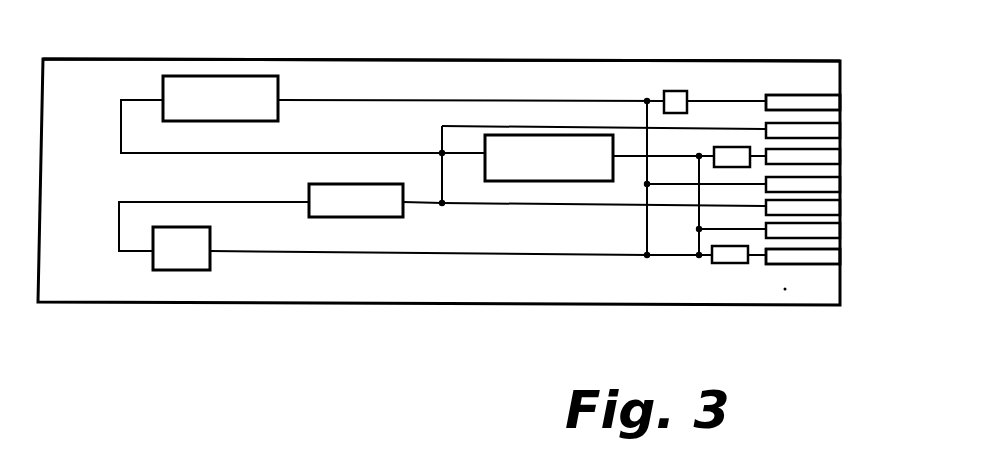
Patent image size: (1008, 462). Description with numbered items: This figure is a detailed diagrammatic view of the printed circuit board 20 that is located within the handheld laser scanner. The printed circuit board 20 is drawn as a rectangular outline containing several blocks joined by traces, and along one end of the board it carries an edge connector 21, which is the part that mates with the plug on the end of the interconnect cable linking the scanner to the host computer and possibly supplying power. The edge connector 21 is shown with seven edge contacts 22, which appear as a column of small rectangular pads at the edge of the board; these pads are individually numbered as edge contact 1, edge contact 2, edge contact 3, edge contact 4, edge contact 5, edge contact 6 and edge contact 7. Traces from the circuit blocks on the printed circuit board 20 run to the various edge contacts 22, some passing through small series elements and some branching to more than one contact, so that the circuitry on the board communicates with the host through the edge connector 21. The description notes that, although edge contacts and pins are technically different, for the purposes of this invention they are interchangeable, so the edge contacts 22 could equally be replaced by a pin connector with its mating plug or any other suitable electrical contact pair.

The edge contact 1 is at (812, 103).
The edge contact 2 is at (812, 131).
The edge contact 3 is at (812, 157).
The edge contact 4 is at (812, 184).
The edge contact 5 is at (812, 208).
The edge contact 6 is at (812, 231).
The edge contact 7 is at (812, 257).
The printed circuit board 20 is at (438, 309).
The edge connector 21 is at (788, 60).
The edge contacts 22 is at (812, 103).